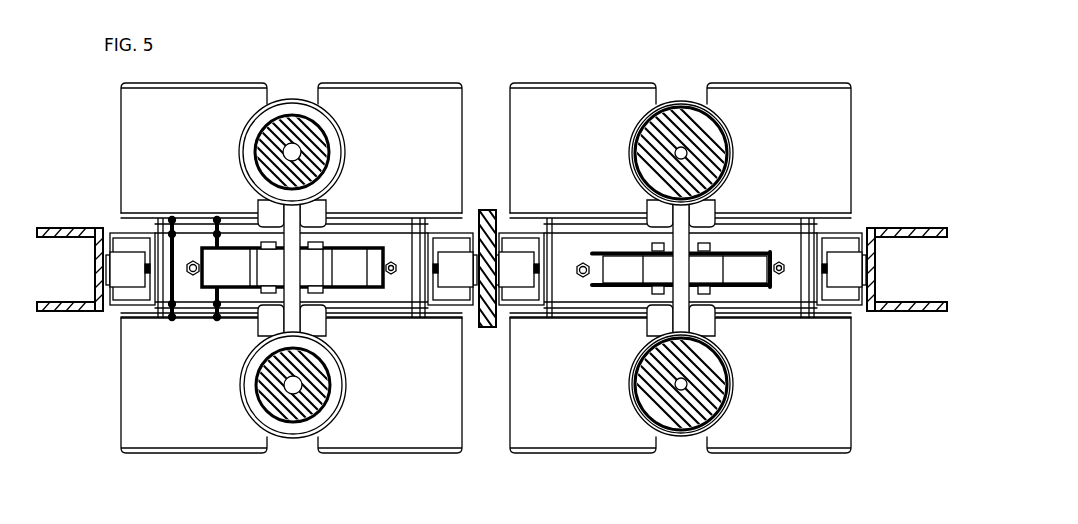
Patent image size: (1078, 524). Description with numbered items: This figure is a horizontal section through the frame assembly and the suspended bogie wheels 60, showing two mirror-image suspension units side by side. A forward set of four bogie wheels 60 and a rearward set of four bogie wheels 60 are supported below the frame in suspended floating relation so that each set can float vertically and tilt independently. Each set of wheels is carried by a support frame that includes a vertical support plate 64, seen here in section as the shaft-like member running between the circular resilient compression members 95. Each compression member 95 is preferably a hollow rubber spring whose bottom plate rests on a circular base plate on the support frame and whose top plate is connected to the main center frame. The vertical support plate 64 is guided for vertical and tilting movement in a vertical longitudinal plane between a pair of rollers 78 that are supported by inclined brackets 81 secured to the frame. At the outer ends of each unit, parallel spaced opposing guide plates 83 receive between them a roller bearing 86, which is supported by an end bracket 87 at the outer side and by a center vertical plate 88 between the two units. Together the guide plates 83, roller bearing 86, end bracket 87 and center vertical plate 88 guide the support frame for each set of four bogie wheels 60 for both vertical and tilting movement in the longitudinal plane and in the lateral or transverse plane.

The bogie wheels 60 is at (528, 100).
The vertical support plate 64 is at (295, 320).
The rollers 78 is at (268, 270).
The inclined brackets 81 is at (624, 270).
The guide plates 83 is at (130, 243).
The roller bearing 86 is at (838, 272).
The end bracket 87 is at (80, 228).
The center vertical plate 88 is at (488, 335).
The resilient compression member 95 is at (270, 148).